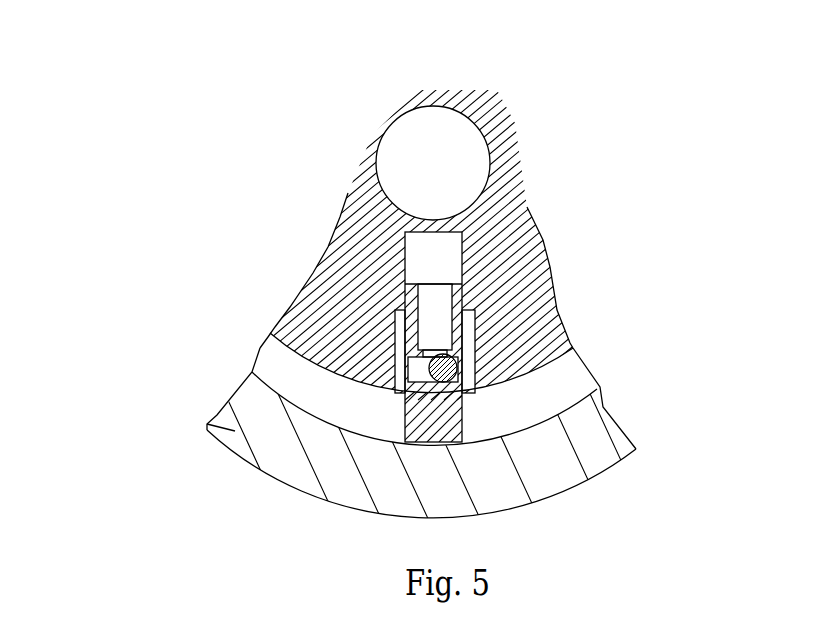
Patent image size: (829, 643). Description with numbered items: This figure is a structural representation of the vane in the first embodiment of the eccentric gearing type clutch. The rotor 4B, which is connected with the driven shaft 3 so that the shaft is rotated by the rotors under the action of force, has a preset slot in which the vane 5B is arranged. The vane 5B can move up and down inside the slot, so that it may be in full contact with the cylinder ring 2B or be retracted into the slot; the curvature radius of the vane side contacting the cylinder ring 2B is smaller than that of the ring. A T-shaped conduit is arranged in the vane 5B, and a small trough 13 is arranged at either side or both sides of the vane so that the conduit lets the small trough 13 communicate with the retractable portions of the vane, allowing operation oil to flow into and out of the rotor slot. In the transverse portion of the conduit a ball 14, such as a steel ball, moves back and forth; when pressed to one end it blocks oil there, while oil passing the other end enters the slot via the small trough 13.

The driven shaft 3 is at (442, 159).
The rotor 4B is at (513, 255).
The vane 5B is at (447, 418).
The small trough 13 is at (475, 343).
The ball 14 is at (430, 363).
The cylinder ring 2B is at (233, 427).